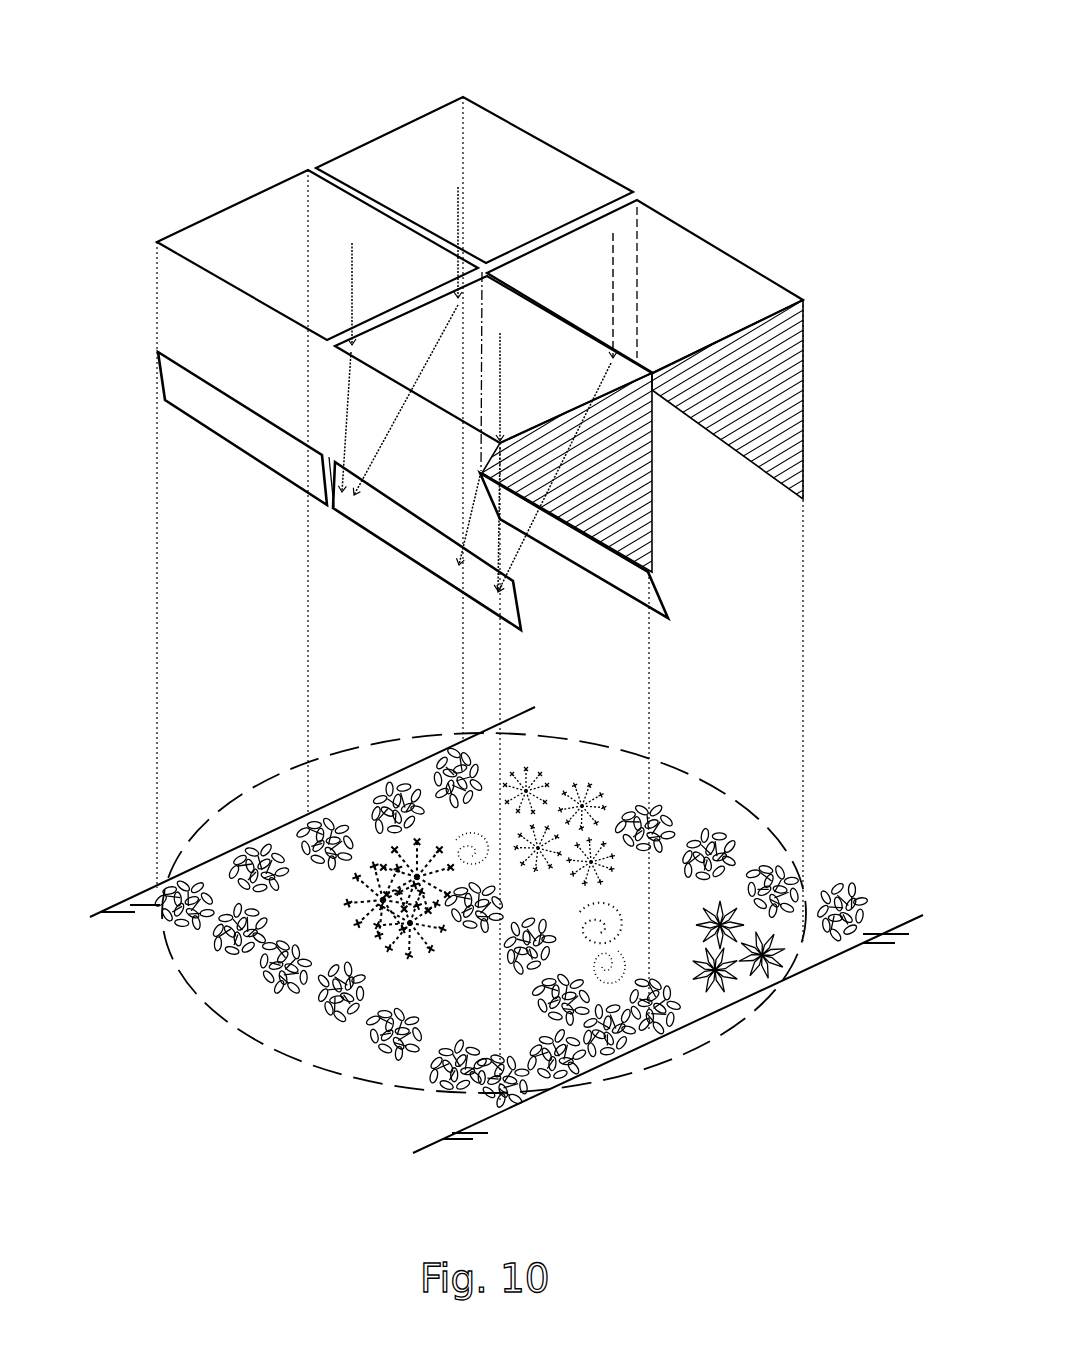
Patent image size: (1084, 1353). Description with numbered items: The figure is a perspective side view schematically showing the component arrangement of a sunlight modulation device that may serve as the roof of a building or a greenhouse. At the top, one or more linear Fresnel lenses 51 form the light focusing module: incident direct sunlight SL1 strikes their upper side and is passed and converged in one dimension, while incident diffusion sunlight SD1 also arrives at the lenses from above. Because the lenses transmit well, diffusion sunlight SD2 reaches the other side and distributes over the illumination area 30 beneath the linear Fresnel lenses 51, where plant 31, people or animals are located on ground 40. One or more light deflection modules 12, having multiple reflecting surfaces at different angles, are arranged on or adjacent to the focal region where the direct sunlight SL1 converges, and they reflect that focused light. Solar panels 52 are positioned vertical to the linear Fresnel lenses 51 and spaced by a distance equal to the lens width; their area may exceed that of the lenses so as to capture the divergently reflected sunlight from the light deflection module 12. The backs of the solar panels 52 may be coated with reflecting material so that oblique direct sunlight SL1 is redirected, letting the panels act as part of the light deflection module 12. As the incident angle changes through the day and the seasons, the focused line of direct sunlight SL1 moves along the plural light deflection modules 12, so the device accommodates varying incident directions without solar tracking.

The light deflection module 12 is at (247, 441).
The linear Fresnel lens 51 is at (225, 262).
The solar panel 52 is at (783, 462).
The illumination area 30 is at (283, 1060).
The plant 31 is at (280, 942).
The ground 40 is at (515, 1108).
The incident diffusion sunlight SD1 is at (231, 154).
The diffusion sunlight SD2 is at (218, 765).
The direct sunlight SL1 is at (350, 262).